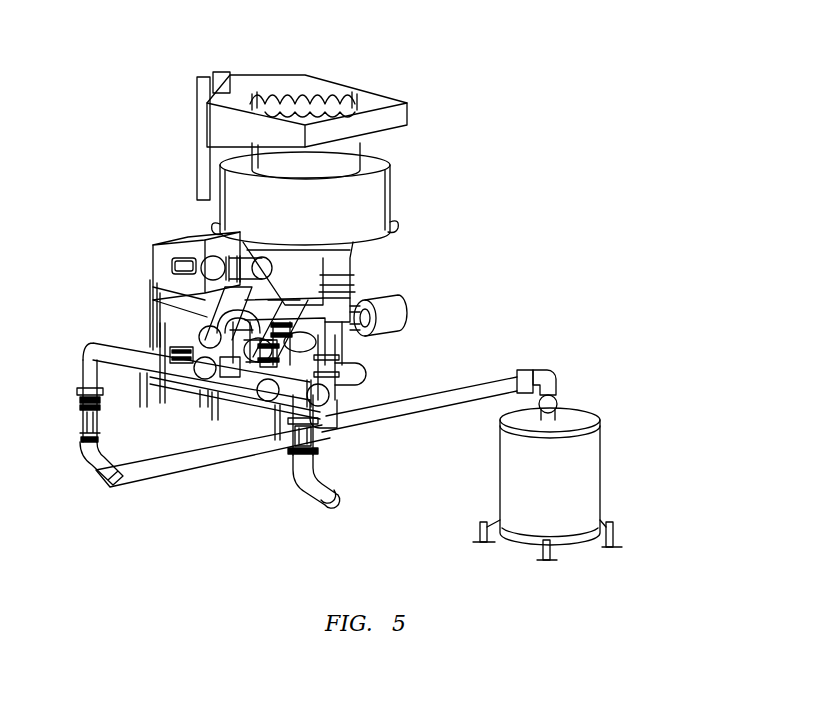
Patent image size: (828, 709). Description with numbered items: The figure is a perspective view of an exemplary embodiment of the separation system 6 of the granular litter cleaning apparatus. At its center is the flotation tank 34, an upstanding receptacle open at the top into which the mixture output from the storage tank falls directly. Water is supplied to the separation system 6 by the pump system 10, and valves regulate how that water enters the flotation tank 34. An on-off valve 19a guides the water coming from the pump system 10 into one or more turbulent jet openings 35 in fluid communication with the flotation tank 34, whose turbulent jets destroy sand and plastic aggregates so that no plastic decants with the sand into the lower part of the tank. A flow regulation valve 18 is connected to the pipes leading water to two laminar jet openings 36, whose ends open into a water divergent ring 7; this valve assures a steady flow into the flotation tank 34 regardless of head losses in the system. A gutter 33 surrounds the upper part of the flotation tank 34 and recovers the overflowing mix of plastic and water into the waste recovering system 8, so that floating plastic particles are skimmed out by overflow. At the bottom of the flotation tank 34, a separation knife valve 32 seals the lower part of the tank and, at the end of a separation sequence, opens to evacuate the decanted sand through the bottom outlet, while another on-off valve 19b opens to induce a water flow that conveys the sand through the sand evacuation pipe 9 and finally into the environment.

The separation system 6 is at (172, 68).
The gutter 33 is at (243, 92).
The flotation tank 34 is at (313, 157).
The water divergent ring 7 is at (375, 198).
The turbulent jet opening 35 is at (350, 257).
The separation knife valve 32 is at (380, 320).
The waste recovering system 8 is at (156, 199).
The laminar jet openings 36 is at (183, 240).
The flow regulation valve 18 is at (175, 345).
The on-off valve 19a is at (258, 342).
The on-off valve 19b is at (322, 370).
The sand evacuation pipe 9 is at (307, 483).
The pump system 10 is at (628, 402).